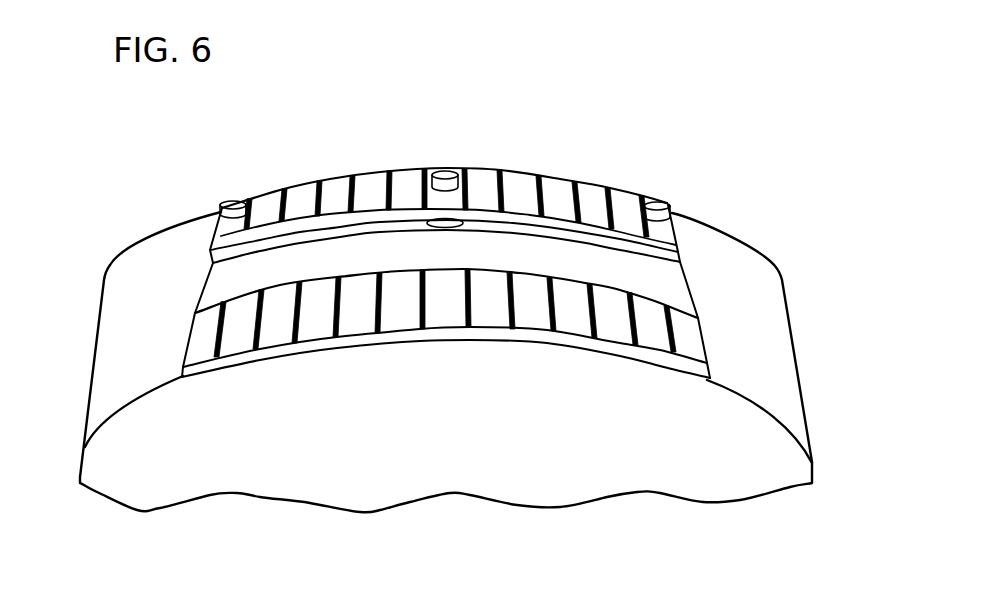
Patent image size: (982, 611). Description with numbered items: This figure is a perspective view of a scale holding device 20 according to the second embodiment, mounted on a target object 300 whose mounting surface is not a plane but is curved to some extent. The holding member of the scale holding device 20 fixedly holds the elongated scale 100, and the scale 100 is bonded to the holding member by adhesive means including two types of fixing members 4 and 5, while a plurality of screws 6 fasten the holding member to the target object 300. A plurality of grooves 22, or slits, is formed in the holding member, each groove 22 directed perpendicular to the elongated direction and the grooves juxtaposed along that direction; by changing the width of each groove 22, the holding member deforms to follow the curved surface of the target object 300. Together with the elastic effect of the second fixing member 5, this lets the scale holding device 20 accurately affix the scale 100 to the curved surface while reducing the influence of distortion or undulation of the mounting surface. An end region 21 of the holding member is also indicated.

The scale holding device 20 is at (744, 104).
The first fixing member 4 is at (450, 221).
The second fixing member 5 is at (339, 233).
The screw 6 is at (231, 202).
The ring end portion 21 is at (222, 237).
The groove 22 is at (390, 192).
The scale 100 is at (688, 288).
The target object 300 is at (112, 373).